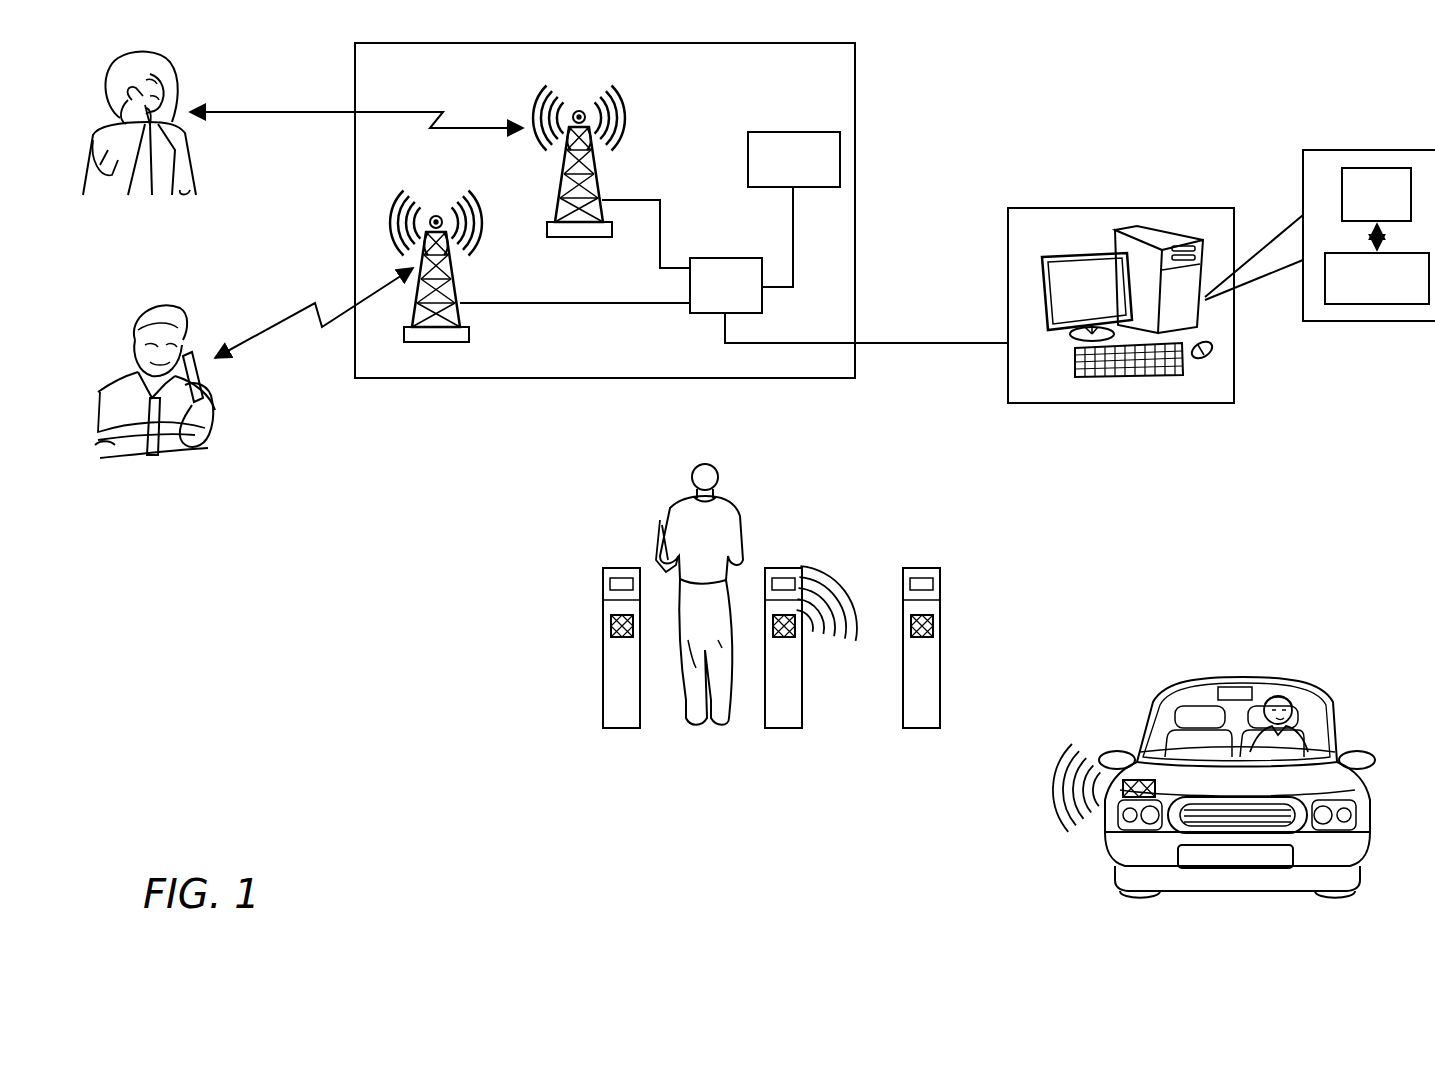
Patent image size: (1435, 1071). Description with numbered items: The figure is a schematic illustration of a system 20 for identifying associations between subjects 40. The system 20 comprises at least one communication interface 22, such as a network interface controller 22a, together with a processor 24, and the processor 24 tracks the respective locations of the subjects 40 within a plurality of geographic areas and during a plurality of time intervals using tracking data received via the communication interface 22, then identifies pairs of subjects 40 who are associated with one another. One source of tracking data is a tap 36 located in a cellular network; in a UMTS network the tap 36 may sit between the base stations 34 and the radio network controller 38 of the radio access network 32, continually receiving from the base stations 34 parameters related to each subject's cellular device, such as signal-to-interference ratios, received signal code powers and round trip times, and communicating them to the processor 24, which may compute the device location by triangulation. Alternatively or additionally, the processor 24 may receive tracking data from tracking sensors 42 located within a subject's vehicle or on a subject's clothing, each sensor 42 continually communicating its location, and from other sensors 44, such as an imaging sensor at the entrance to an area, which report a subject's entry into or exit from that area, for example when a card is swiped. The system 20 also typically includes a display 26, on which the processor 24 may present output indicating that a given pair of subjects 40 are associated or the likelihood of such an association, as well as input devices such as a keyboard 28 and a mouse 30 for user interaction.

The system 20 is at (1154, 300).
The communication interface 22 is at (1369, 237).
The network interface controller 22a is at (1369, 235).
The processor 24 is at (1380, 304).
The display 26 is at (1085, 255).
The keyboard 28 is at (1170, 385).
The mouse 30 is at (1212, 350).
The radio access network 32 is at (858, 96).
The base station 34 is at (563, 172).
The tap 36 is at (724, 258).
The radio network controller 38 is at (790, 132).
The subject 40 is at (196, 158).
The tracking sensor 42 is at (1122, 782).
The sensor 44 is at (786, 640).